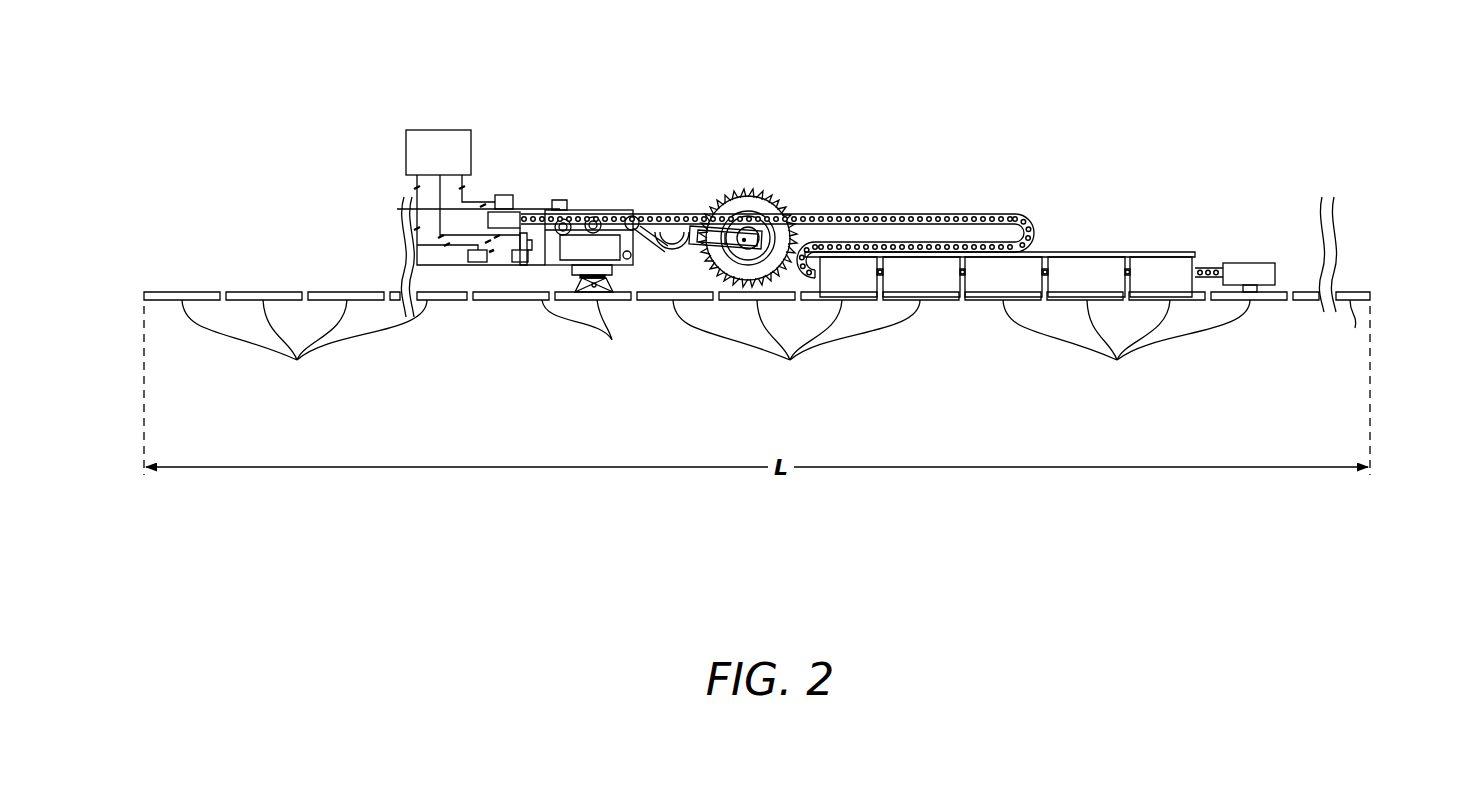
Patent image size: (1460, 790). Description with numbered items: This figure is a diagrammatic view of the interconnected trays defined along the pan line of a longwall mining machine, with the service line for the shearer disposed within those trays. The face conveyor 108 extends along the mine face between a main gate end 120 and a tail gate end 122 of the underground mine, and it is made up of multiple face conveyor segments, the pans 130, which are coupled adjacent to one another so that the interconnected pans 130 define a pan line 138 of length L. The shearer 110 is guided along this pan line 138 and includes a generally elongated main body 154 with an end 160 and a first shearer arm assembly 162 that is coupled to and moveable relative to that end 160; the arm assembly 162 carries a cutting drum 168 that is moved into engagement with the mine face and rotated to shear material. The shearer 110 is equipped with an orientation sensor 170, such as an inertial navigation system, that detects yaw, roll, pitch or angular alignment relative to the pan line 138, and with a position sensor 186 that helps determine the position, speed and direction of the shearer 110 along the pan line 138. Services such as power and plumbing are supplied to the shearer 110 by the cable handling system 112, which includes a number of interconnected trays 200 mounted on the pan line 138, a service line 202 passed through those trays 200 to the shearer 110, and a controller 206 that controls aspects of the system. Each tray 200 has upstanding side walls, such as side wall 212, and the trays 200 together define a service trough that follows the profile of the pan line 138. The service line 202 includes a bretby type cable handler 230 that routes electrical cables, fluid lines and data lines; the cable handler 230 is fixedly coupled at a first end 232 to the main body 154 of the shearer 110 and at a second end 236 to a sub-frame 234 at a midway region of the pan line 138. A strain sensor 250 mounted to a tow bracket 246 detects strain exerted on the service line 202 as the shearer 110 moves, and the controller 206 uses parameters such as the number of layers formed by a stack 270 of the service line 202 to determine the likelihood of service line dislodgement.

The main gate end 120 is at (131, 266).
The tail gate end 122 is at (1398, 172).
The face conveyor 108 is at (1337, 290).
The pan line 138 is at (1352, 290).
The pans 130 is at (757, 341).
The controller 206 is at (448, 130).
The tow bracket 246 is at (519, 212).
The strain sensor 250 is at (505, 195).
The first end 232 is at (516, 212).
The orientation sensor 170 is at (478, 268).
The position sensor 186 is at (516, 265).
The main body 154 is at (585, 208).
The shearer 110 is at (640, 210).
The end 160 is at (660, 210).
The cutting drum 168 is at (756, 190).
The first shearer arm assembly 162 is at (775, 197).
The service line 202 is at (930, 210).
The cable handling system 112 is at (1015, 210).
The cable handler 230 is at (885, 212).
The stack 270 is at (1036, 231).
The interconnected trays 200 is at (1125, 252).
The side wall 212 is at (840, 255).
The second end 236 is at (1210, 266).
The sub-frame 234 is at (1258, 268).